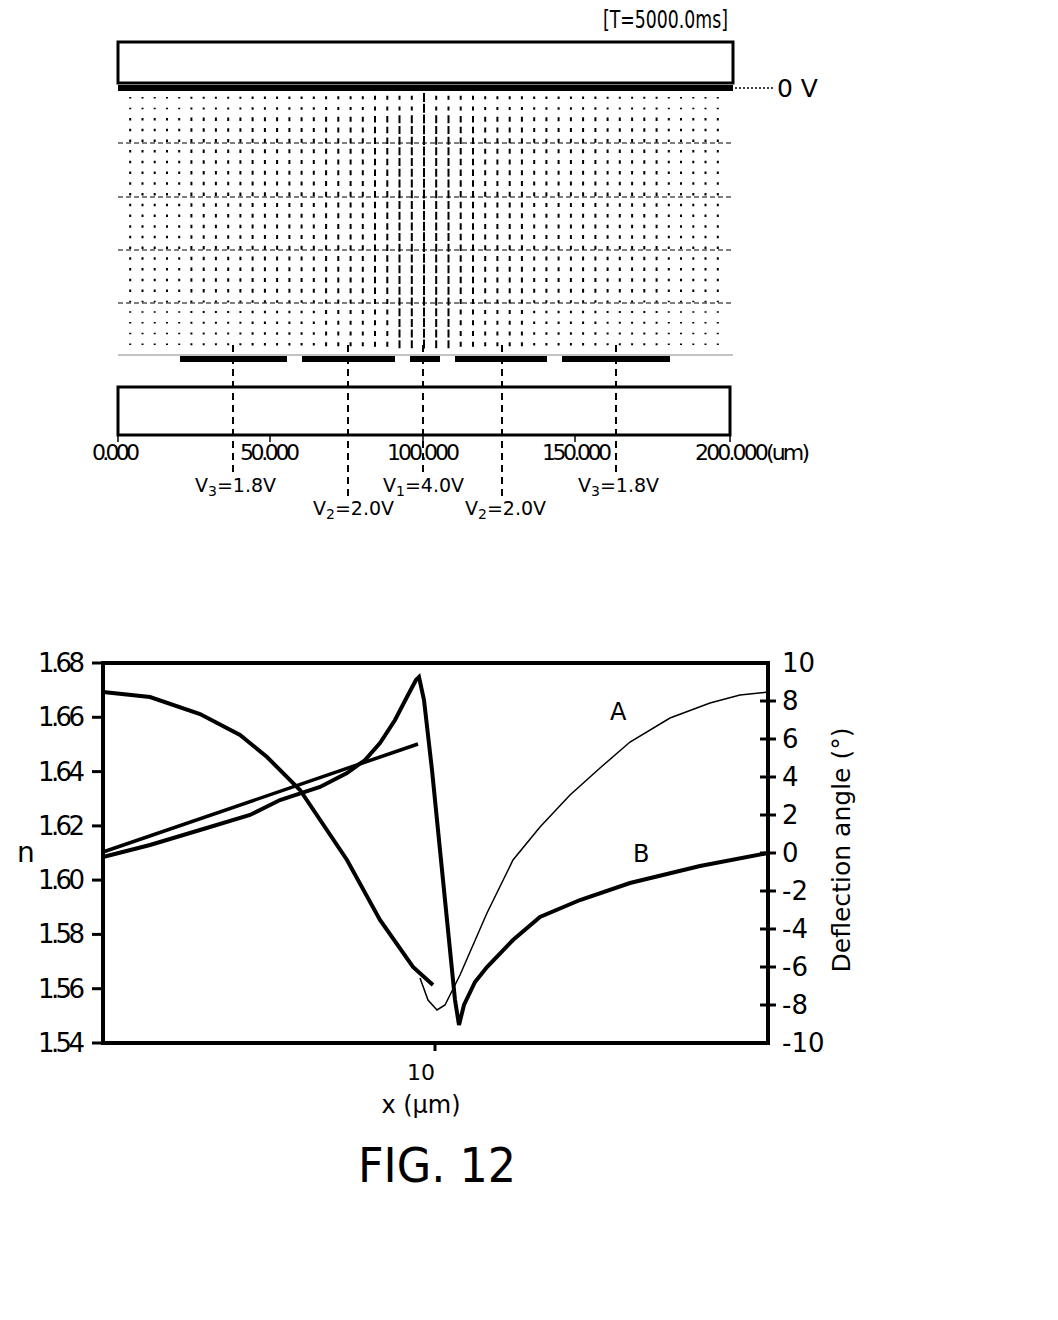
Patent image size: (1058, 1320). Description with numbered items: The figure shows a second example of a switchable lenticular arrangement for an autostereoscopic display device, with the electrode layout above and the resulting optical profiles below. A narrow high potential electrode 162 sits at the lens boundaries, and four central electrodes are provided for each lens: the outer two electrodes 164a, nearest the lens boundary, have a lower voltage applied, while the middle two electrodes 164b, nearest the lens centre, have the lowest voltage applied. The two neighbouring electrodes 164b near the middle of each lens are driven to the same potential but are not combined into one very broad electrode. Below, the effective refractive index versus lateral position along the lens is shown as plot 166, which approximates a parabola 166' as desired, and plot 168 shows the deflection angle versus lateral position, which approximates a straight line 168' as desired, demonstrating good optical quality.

The high potential electrode 162 is at (413, 370).
The outer central electrodes 164a is at (311, 370).
The middle central electrodes 164b is at (195, 370).
The effective refractive index plot 166 is at (594, 851).
The parabola 166' is at (268, 838).
The deflection angle plot 168 is at (435, 851).
The straight line 168' is at (260, 780).